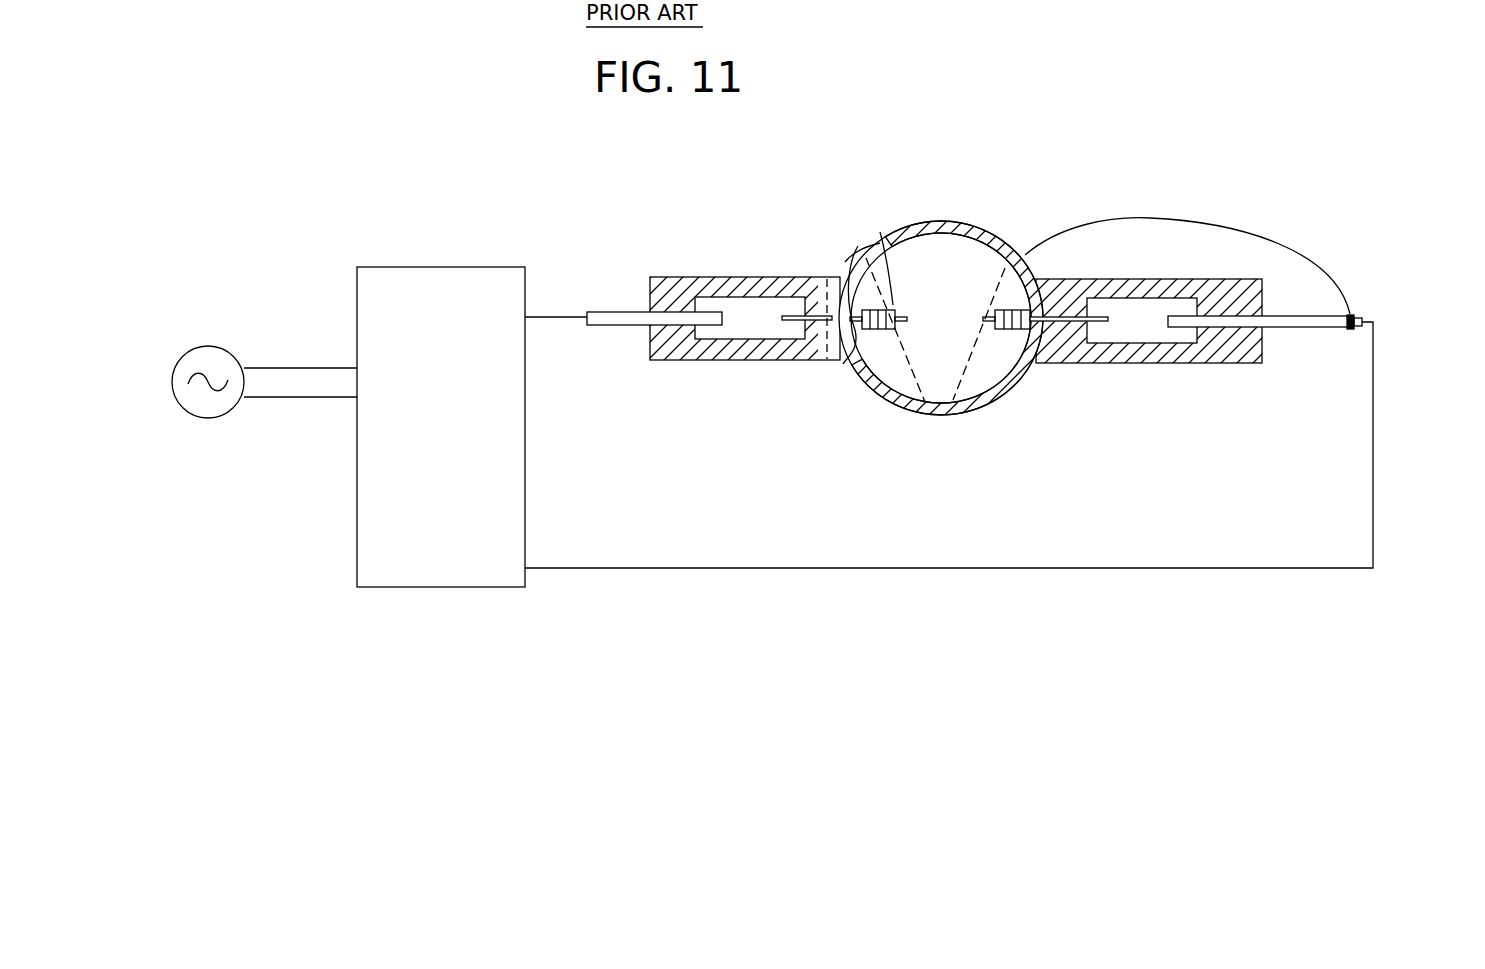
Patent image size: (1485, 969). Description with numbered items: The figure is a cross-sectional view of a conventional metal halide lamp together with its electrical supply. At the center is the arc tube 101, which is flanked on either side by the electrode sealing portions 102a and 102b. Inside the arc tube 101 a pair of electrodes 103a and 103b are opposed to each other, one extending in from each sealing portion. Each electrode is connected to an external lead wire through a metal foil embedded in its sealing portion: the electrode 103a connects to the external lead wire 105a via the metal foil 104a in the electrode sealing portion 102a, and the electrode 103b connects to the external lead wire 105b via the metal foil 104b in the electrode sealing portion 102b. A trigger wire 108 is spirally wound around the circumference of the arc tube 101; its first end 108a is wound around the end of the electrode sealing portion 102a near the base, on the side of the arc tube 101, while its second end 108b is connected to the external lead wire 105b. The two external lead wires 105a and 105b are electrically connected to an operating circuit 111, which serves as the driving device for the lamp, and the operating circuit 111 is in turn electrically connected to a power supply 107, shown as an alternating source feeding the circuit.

The arc tube 101 is at (985, 405).
The electrode sealing portion 102a is at (655, 345).
The electrode sealing portion 102b is at (1232, 360).
The electrode 103a is at (787, 315).
The electrode 103b is at (1060, 347).
The metal foil 104a is at (752, 361).
The metal foil 104b is at (1138, 330).
The external lead wire 105a is at (613, 310).
The external lead wire 105b is at (1298, 330).
The power supply 107 is at (237, 410).
The trigger wire 108 is at (1193, 220).
The first end of trigger wire 108a is at (843, 364).
The second end of trigger wire 108b is at (1352, 314).
The operating circuit 111 is at (437, 588).